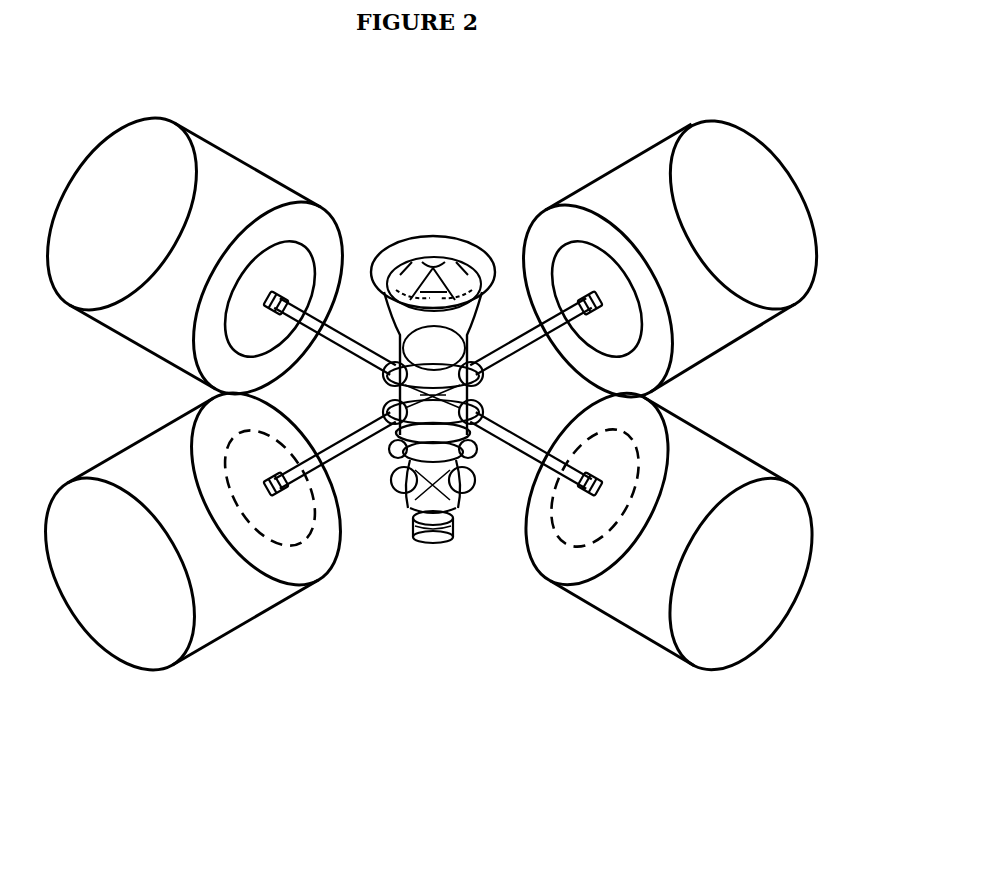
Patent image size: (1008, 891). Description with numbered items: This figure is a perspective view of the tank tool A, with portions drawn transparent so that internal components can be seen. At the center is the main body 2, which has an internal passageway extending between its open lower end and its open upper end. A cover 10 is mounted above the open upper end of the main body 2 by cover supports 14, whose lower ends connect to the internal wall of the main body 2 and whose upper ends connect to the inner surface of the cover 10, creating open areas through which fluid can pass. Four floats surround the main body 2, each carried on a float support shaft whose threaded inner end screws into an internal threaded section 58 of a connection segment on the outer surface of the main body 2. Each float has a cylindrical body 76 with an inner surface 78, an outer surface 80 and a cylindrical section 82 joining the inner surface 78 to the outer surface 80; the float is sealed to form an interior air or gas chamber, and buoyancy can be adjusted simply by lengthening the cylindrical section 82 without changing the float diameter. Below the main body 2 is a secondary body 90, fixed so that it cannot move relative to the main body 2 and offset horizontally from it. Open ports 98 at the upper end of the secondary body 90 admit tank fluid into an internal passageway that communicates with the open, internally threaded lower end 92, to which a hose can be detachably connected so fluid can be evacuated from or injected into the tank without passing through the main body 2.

The main body 2 is at (478, 392).
The cover 10 is at (428, 240).
The cover supports 14 is at (460, 258).
The internal threaded section 58 is at (285, 508).
The cylindrical body 76 is at (629, 138).
The inner surface 78 is at (300, 226).
The outer surface 80 is at (815, 200).
The cylindrical section 82 is at (237, 152).
The secondary body 90 is at (416, 562).
The lower end 92 is at (440, 545).
The open ports 98 is at (393, 470).
The tank tool A is at (448, 134).